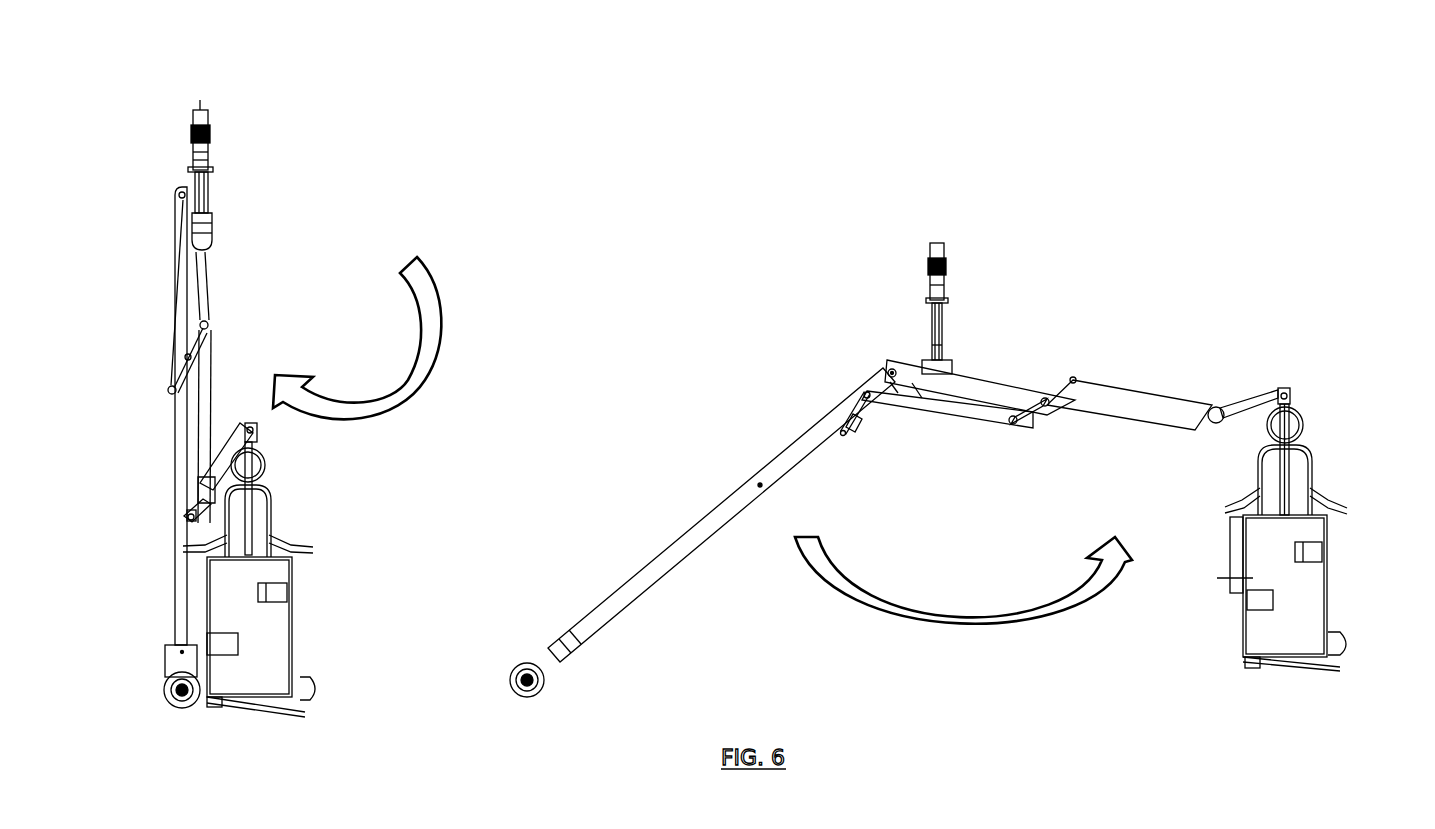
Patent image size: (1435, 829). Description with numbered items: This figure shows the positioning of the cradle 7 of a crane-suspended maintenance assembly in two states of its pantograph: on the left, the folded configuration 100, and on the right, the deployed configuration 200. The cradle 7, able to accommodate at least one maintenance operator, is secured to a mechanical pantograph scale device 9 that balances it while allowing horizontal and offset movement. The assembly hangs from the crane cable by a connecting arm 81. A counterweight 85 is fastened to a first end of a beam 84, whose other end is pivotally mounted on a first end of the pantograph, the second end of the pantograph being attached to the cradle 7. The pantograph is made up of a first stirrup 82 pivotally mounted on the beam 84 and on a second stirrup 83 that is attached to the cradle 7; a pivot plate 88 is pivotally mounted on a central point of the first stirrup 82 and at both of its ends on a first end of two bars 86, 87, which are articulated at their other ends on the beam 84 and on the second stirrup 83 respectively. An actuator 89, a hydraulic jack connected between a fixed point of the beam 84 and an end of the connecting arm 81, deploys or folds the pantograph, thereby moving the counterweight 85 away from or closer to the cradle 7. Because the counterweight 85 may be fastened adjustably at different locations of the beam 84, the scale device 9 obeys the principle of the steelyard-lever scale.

The cradle 7 is at (318, 592).
The scale device 9 is at (163, 555).
The connecting arm 81 is at (943, 244).
The first stirrup 82 is at (1000, 393).
The second stirrup 83 is at (1283, 390).
The beam 84 is at (615, 612).
The counterweight 85 is at (550, 643).
The bar 86 is at (967, 412).
The bar 87 is at (1137, 397).
The pivot plate 88 is at (1033, 413).
The actuator 89 is at (840, 437).
The folded configuration 100 is at (228, 328).
The deployed configuration 200 is at (1198, 358).